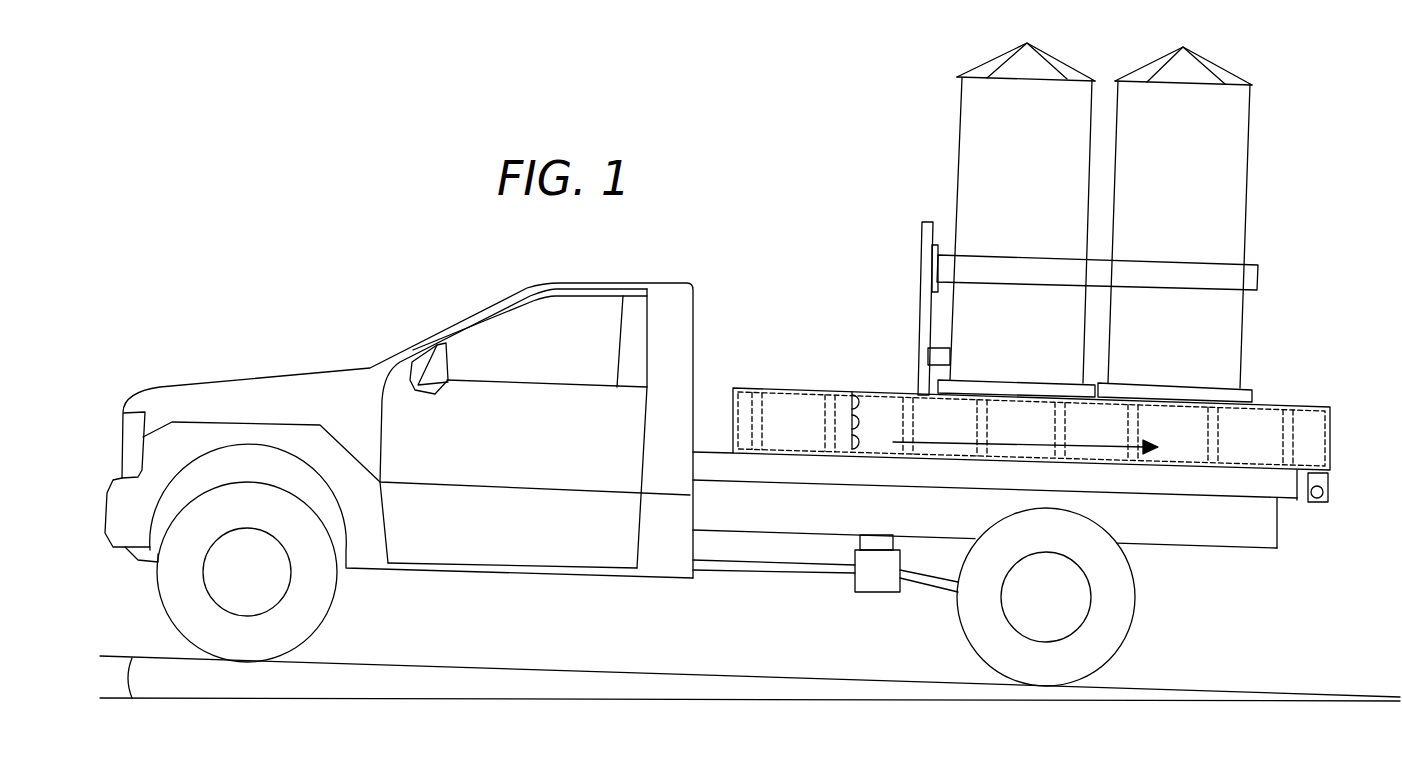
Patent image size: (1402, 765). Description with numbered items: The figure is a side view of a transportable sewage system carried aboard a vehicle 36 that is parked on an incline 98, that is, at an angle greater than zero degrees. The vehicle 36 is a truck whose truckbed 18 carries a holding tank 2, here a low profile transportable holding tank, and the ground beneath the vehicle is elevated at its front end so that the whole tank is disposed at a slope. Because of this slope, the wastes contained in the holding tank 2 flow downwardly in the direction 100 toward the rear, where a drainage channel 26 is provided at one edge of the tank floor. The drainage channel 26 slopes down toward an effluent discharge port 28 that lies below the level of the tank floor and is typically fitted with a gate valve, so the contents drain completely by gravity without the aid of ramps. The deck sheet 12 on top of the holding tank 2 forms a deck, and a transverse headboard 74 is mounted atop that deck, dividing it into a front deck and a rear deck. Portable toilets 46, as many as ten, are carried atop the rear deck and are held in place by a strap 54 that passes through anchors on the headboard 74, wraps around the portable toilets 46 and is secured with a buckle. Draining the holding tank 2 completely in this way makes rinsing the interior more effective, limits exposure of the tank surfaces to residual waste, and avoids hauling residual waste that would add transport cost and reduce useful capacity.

The holding tank 2 is at (1350, 403).
The deck sheet 12 is at (820, 390).
The truckbed 18 is at (862, 478).
The drainage channel 26 is at (1328, 487).
The effluent discharge port 28 is at (1325, 494).
The vehicle 36 is at (1190, 548).
The portable toilet 46 is at (1034, 153).
The strap 54 is at (1258, 273).
The headboard 74 is at (920, 282).
The incline 98 is at (128, 680).
The direction 100 is at (925, 442).